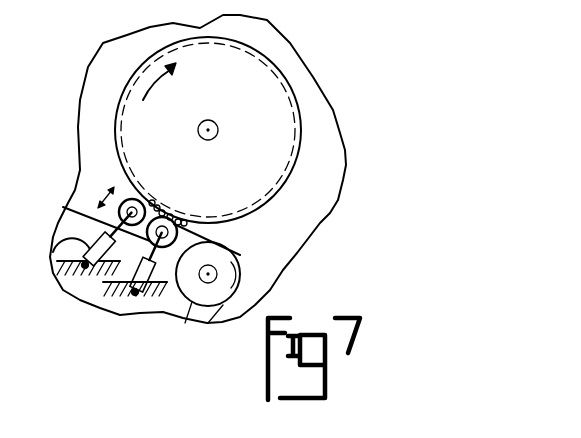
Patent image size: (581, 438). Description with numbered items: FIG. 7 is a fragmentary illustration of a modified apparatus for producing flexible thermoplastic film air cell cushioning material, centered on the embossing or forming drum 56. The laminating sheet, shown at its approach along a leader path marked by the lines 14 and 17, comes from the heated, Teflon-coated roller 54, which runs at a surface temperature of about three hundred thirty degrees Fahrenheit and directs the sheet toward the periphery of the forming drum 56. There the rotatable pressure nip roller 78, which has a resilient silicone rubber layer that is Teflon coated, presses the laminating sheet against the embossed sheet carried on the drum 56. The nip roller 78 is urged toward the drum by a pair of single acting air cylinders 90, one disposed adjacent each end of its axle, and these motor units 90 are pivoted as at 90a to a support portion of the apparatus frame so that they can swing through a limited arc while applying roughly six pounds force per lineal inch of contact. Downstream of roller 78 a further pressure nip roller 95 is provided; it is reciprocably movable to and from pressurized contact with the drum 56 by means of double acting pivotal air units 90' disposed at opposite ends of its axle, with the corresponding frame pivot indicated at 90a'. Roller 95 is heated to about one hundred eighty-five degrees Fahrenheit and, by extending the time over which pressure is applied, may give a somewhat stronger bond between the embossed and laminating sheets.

The web 14 is at (112, 0).
The guide roller 17 is at (72, 0).
The roller 54 is at (220, 257).
The forming drum 56 is at (213, 50).
The nip roller 78 is at (183, 223).
The air cylinders 90 is at (158, 332).
The double acting pivotal air units 90' is at (81, 249).
The pivot 90a is at (140, 324).
The actuating cylinder 90a' is at (90, 297).
The further pressure nip roller 95 is at (140, 198).